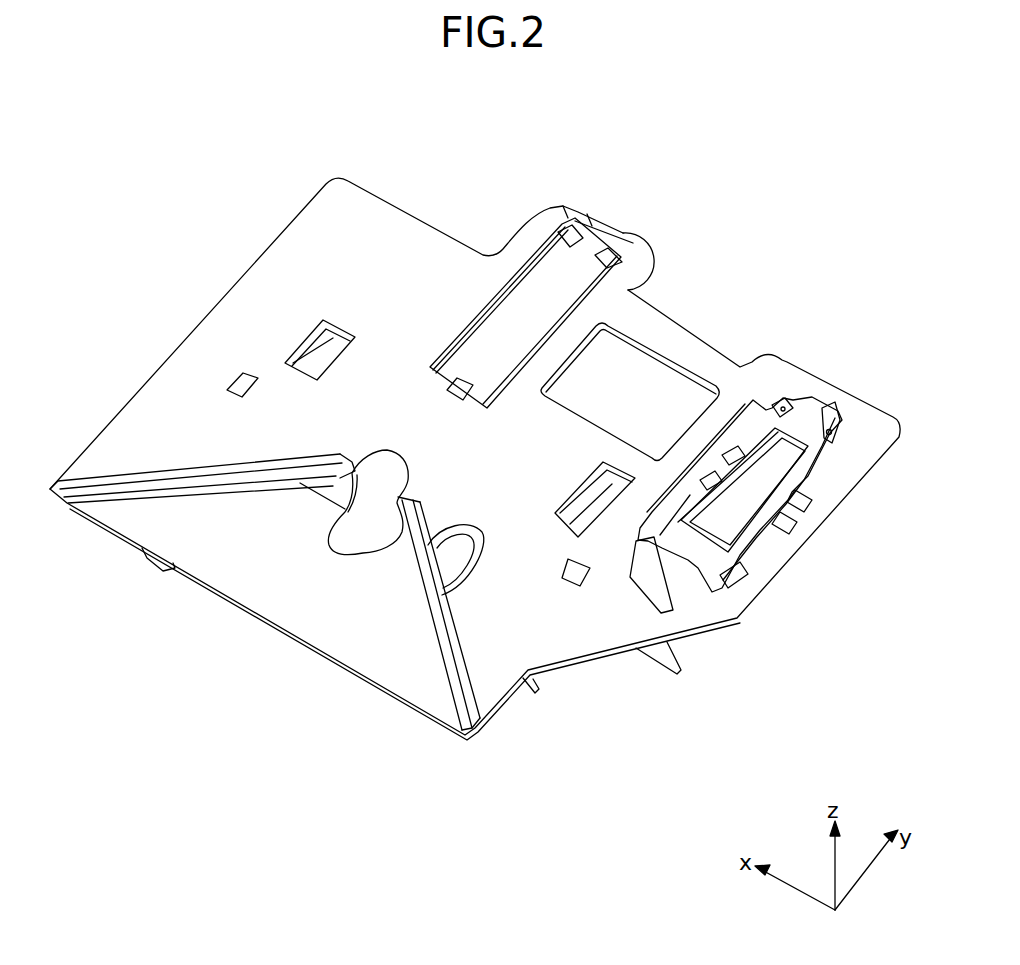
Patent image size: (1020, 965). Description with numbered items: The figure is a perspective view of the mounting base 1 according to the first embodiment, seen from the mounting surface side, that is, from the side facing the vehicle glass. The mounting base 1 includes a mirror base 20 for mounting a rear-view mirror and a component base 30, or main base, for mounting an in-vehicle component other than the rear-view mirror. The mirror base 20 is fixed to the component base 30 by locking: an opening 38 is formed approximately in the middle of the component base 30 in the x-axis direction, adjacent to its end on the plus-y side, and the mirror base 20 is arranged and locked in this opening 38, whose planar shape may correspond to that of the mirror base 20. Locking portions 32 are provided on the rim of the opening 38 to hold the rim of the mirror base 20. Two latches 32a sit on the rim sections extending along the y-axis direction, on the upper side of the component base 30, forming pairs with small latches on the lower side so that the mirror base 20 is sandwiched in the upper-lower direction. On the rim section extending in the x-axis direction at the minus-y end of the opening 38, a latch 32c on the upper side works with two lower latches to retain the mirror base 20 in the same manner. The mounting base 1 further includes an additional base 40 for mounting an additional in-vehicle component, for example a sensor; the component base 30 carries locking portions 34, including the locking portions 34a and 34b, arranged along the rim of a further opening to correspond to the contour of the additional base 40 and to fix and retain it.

The mounting base 1 is at (865, 132).
The mirror base 20 is at (603, 228).
The component base 30 is at (378, 188).
The locking portions 32 is at (591, 261).
The locking portion (latch) 32a is at (578, 230).
The latch 32c is at (463, 378).
The locking portions 34 is at (789, 506).
The locking portion 34a is at (795, 397).
The locking portion 34b is at (737, 570).
The opening 38 is at (628, 278).
The additional base 40 is at (820, 468).